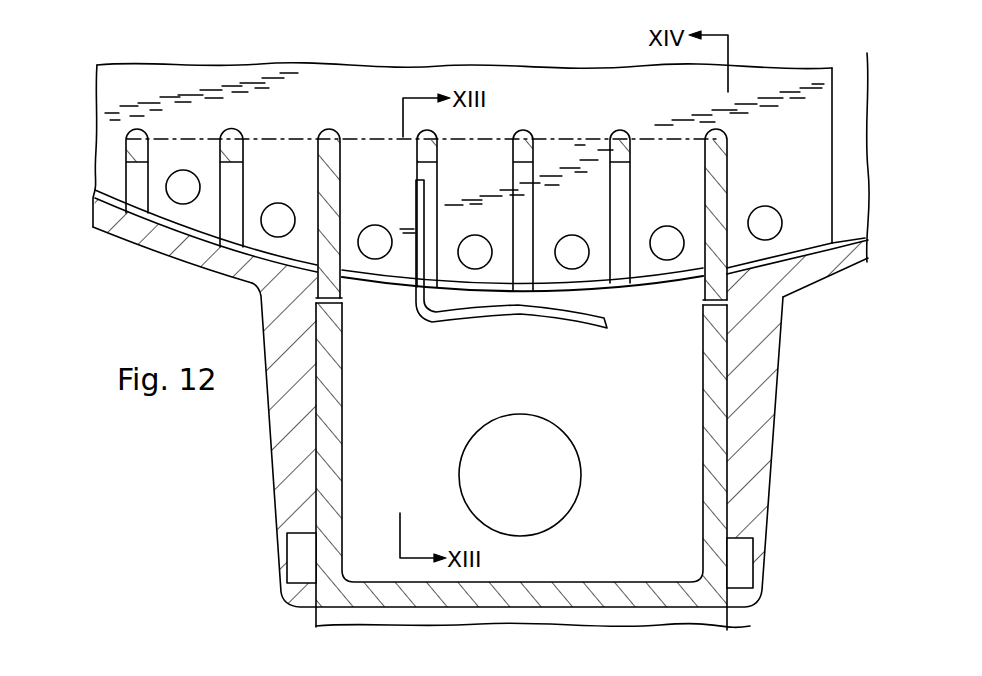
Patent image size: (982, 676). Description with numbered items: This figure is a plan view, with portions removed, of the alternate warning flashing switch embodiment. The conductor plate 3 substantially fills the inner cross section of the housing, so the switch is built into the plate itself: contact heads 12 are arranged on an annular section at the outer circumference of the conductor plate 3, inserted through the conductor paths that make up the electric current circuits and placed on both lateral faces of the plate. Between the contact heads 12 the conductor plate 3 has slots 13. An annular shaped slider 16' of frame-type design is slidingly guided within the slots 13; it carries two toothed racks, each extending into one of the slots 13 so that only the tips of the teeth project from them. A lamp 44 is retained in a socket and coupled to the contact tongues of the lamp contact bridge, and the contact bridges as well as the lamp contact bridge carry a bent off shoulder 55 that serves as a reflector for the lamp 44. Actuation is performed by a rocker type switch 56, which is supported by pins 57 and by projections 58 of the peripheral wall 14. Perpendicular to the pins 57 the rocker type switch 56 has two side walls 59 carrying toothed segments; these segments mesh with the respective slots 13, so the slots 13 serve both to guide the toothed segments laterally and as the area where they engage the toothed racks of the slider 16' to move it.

The conductor plate 3 is at (799, 73).
The contact heads 12 is at (768, 222).
The slots 13 is at (335, 137).
The peripheral wall 14 is at (198, 257).
The annular shaped slider 16' is at (422, 114).
The lamp 44 is at (577, 458).
The bent off shoulder 55 is at (593, 326).
The rocker type switch 56 is at (745, 627).
The pins 57 is at (305, 565).
The projections 58 is at (287, 445).
The side walls 59 is at (333, 477).